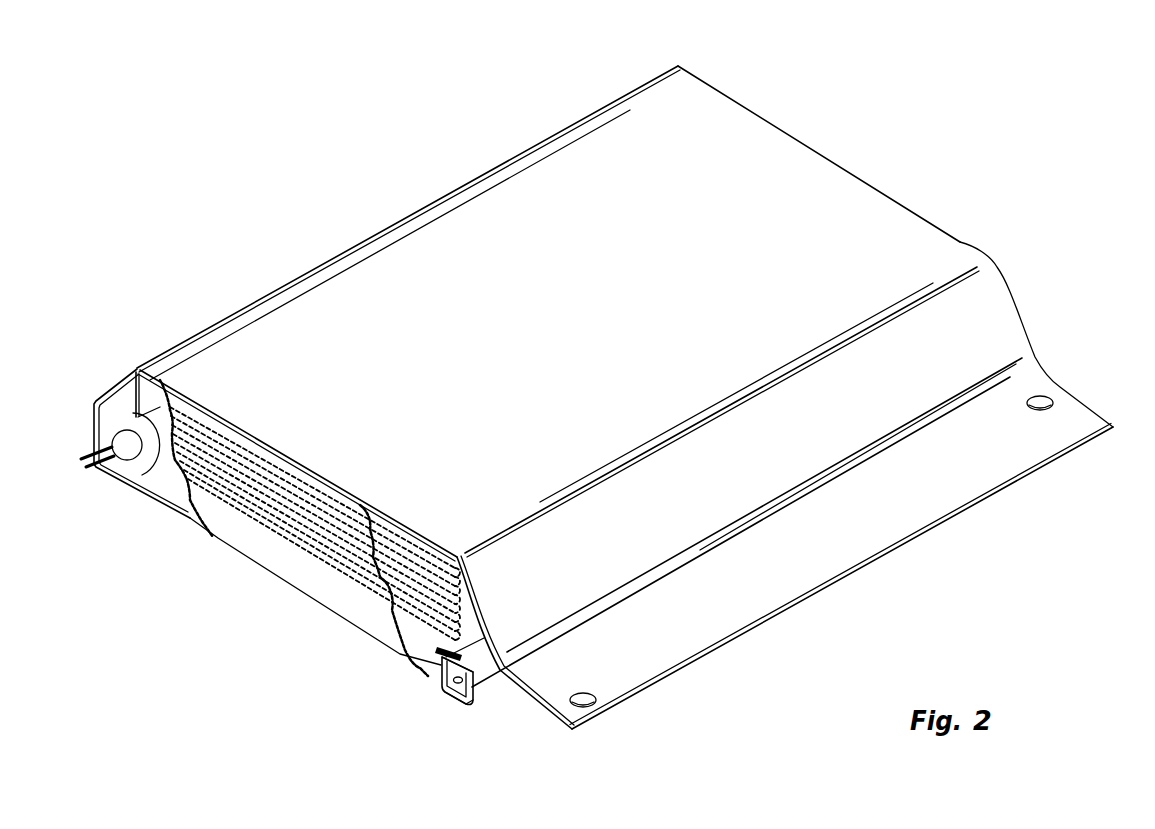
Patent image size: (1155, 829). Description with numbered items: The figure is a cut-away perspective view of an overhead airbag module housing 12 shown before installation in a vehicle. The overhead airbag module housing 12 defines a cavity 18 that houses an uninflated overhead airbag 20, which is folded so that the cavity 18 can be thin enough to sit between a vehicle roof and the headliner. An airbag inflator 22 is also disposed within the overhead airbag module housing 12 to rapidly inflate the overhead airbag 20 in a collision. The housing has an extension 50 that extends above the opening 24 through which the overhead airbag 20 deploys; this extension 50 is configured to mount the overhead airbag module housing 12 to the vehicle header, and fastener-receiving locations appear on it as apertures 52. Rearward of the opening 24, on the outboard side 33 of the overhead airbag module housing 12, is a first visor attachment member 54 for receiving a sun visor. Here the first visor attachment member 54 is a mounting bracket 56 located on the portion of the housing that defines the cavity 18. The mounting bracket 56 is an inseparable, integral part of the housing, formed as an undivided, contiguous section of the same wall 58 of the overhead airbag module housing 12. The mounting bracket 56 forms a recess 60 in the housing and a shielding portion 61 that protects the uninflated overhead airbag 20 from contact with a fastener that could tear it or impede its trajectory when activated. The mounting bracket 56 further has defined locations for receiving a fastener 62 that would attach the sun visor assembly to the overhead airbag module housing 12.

The overhead airbag module housing 12 is at (875, 159).
The cavity 18 is at (281, 525).
The overhead airbag 20 is at (403, 588).
The airbag inflator 22 is at (98, 422).
The opening 24 is at (507, 688).
The outboard side 33 is at (580, 789).
The extension 50 is at (997, 298).
The apertures 52 is at (1047, 412).
The first visor attachment member 54 is at (463, 713).
The mounting bracket 56 is at (427, 738).
The wall 58 is at (440, 662).
The recess 60 is at (418, 659).
The shielding portion 61 is at (503, 658).
The locations for receiving a fastener 62 is at (459, 677).